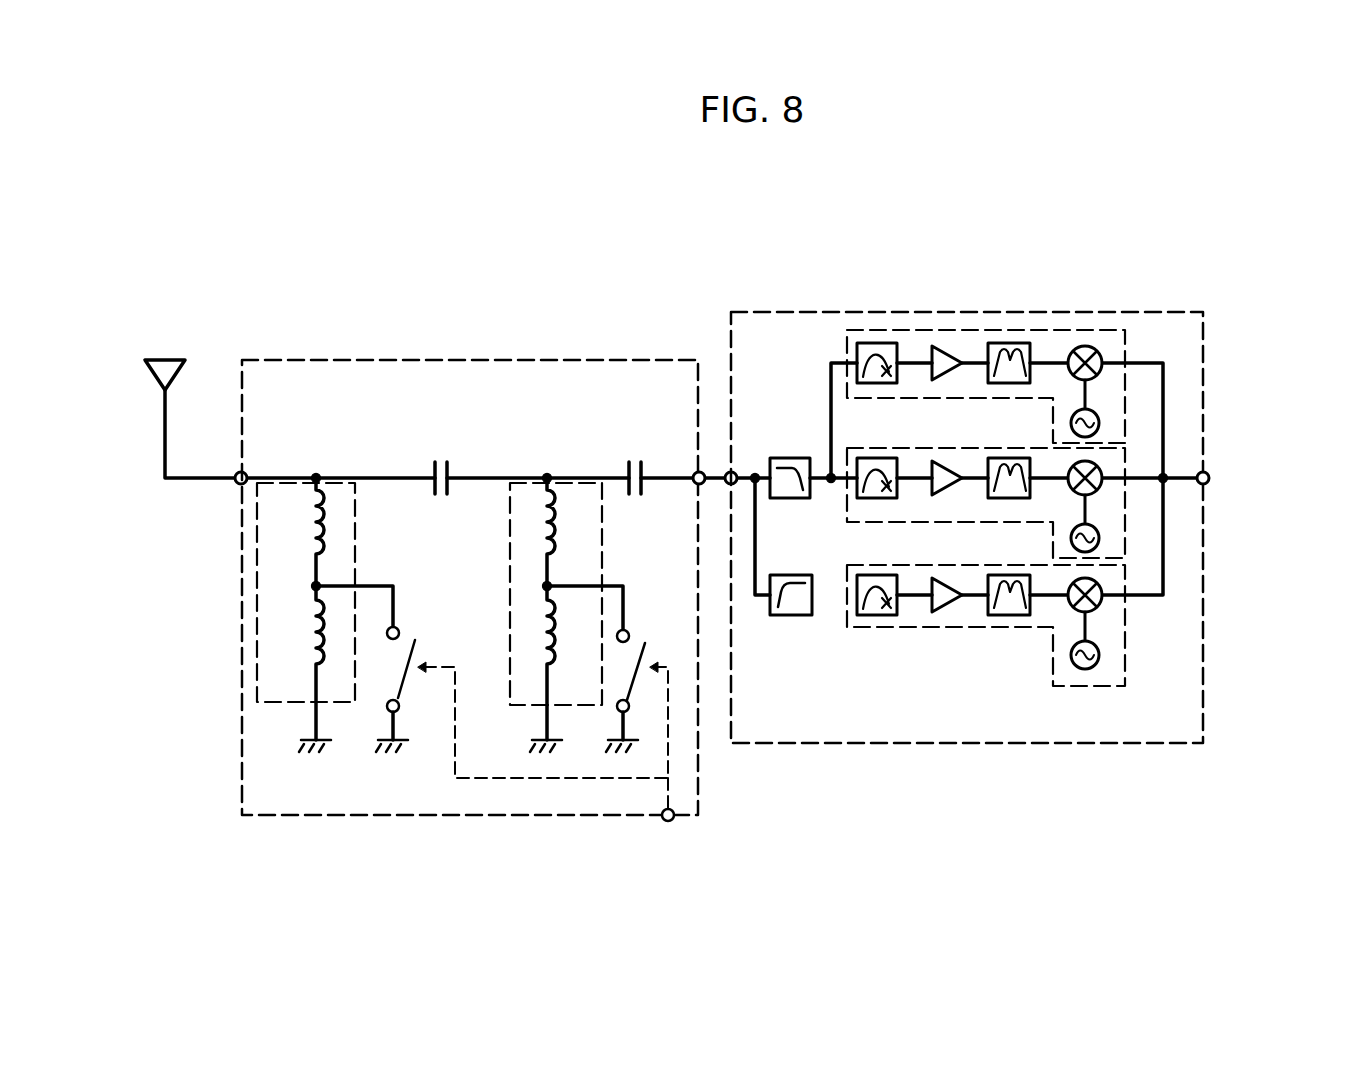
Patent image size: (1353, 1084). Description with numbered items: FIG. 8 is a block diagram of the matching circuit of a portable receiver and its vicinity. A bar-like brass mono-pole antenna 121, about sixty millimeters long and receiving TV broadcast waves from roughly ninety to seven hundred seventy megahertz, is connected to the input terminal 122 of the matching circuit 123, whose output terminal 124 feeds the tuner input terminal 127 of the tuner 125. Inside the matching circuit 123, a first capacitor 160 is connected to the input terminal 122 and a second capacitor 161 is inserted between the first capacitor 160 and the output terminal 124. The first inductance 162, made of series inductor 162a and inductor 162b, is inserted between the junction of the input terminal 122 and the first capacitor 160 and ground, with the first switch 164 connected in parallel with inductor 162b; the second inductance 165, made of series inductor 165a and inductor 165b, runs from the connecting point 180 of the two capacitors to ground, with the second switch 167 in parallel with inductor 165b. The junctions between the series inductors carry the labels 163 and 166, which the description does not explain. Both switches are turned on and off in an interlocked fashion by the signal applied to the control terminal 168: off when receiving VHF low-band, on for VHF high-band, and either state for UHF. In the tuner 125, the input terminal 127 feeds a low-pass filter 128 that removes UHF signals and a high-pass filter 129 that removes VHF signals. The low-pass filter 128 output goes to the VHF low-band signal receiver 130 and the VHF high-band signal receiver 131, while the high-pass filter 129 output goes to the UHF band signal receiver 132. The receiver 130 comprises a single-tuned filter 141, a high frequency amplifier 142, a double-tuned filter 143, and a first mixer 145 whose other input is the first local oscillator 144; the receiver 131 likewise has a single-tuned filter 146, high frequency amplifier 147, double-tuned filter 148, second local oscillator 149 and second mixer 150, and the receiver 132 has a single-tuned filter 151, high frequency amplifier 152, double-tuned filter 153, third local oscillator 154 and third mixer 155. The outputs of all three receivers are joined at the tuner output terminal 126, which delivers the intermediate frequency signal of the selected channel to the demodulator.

The antenna 121 is at (160, 358).
The input terminal 122 is at (237, 482).
The matching circuit 123 is at (345, 358).
The output terminal 124 is at (698, 470).
The tuner 125 is at (1185, 312).
The tuner output terminal 126 is at (1210, 478).
The tuner input terminal 127 is at (736, 470).
The low-pass filter 128 is at (795, 460).
The high-pass filter 129 is at (795, 616).
The VHF low-band signal receiver 130 is at (1128, 332).
The VHF high-band signal receiver 131 is at (1128, 533).
The UHF band signal receiver 132 is at (1083, 690).
The single-tuned filter 141 is at (872, 343).
The high frequency amplifier 142 is at (941, 350).
The double-tuned filter 143 is at (1005, 343).
The first local oscillator 144 is at (1098, 410).
The first mixer 145 is at (1095, 348).
The single-tuned filter 146 is at (880, 458).
The high frequency amplifier 147 is at (950, 460).
The double-tuned filter 148 is at (1015, 458).
The second local oscillator 149 is at (1098, 548).
The second mixer 150 is at (1100, 470).
The single-tuned filter 151 is at (878, 616).
The high frequency amplifier 152 is at (948, 608).
The double-tuned filter 153 is at (1010, 616).
The third local oscillator 154 is at (1100, 665).
The third mixer 155 is at (1103, 602).
The first capacitor 160 is at (435, 462).
The second capacitor 161 is at (635, 462).
The first inductance 162 is at (252, 533).
The inductor 162a is at (315, 472).
The inductor 162b is at (300, 658).
The intermediate node 163 is at (312, 590).
The first switch 164 is at (388, 668).
The second inductance 165 is at (518, 705).
The inductor 165a is at (547, 472).
The inductor 165b is at (547, 680).
The intermediate node 166 is at (547, 586).
The second switch 167 is at (640, 695).
The control terminal 168 is at (672, 822).
The connecting point 180 is at (548, 478).